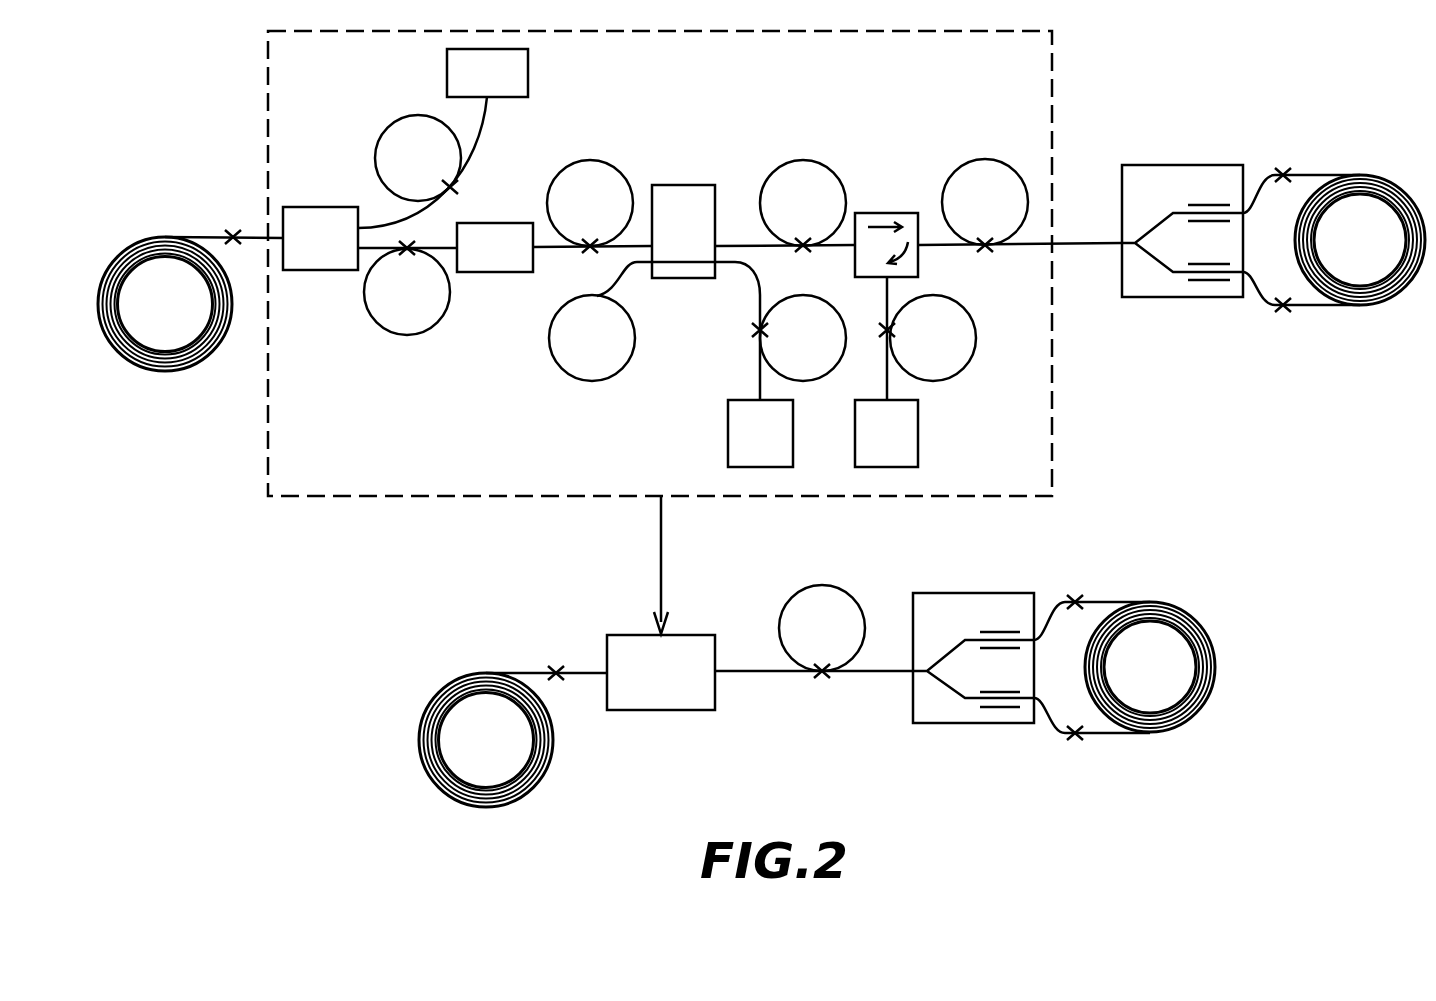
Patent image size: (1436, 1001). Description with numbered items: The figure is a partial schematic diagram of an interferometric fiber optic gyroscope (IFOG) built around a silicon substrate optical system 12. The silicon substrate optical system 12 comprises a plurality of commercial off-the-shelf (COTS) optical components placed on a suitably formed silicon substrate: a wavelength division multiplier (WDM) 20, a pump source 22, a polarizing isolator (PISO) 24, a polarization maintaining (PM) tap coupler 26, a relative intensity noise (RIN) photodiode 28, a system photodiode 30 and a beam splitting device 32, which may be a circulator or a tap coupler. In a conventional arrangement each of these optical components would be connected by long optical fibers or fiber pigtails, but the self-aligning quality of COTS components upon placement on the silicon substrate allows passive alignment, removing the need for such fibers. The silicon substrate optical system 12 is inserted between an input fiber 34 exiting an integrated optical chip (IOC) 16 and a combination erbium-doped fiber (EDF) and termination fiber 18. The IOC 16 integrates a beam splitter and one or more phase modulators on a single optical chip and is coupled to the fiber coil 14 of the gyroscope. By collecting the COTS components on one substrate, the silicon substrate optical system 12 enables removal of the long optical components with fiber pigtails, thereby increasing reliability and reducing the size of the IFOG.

The silicon substrate optical system 12 is at (317, 497).
The fiber coil 14 is at (1383, 298).
The integrated optical chip (IOC) 16 is at (1163, 165).
The combination erbium-doped fiber (EDF) and termination fiber 18 is at (140, 369).
The wavelength division multiplier (WDM) 20 is at (323, 207).
The pump source 22 is at (528, 68).
The polarizing isolator (PISO) 24 is at (490, 223).
The polarization maintaining (PM) tap coupler 26 is at (685, 185).
The relative intensity noise (RIN) photodiode 28 is at (728, 421).
The system photodiode 30 is at (918, 418).
The beam splitting device 32 is at (888, 213).
The input fiber 34 is at (1072, 243).